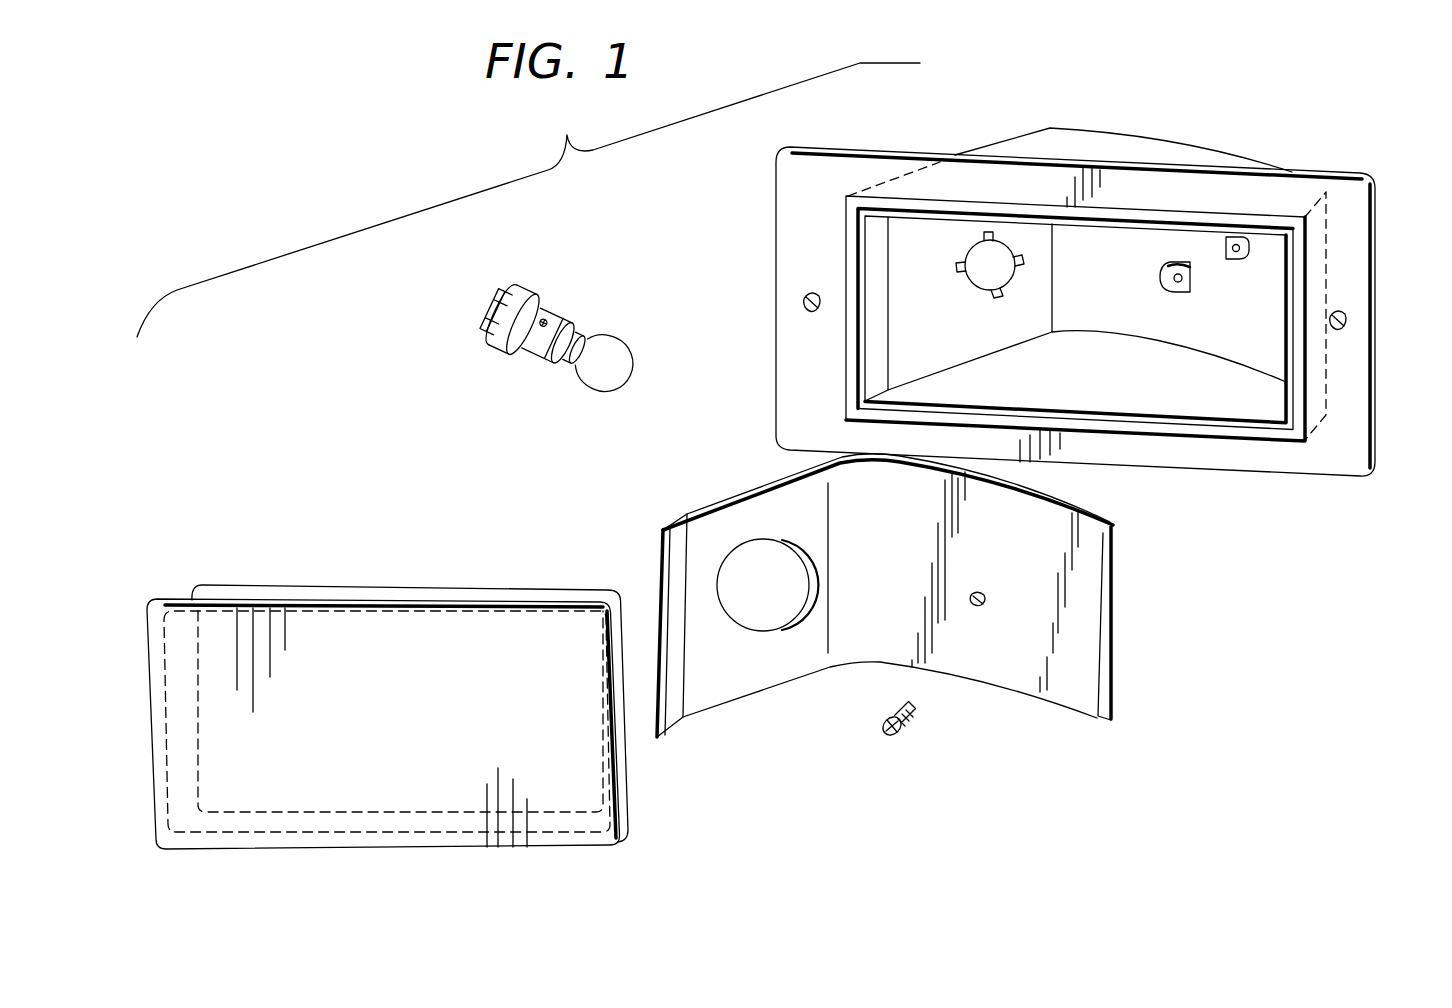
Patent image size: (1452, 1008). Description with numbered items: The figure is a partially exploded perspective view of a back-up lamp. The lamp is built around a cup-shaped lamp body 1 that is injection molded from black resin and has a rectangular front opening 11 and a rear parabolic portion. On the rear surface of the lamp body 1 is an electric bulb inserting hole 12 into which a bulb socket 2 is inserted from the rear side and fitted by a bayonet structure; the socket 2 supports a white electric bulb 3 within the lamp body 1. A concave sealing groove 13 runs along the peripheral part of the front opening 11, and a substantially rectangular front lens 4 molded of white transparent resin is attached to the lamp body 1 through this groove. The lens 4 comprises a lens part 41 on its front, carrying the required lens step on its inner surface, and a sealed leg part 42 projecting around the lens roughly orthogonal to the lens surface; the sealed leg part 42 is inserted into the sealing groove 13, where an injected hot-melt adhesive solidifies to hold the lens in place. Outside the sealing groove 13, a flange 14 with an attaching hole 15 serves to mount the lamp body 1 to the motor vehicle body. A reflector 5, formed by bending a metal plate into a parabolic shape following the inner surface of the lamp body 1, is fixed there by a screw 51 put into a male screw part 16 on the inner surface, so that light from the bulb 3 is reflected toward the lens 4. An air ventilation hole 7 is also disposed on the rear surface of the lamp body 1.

The lamp body 1 is at (1060, 150).
The bulb socket 2 is at (543, 303).
The electric bulb 3 is at (594, 367).
The front lens 4 is at (268, 601).
The lens part 41 is at (438, 797).
The sealed leg part 42 is at (470, 590).
The reflector 5 is at (877, 653).
The screw 51 is at (903, 727).
The air ventilation hole 7 is at (1239, 240).
The front opening 11 is at (1207, 400).
The electric bulb inserting hole 12 is at (973, 263).
The sealing groove 13 is at (1145, 425).
The flange 14 is at (1358, 436).
The attaching hole 15 is at (1350, 314).
The male screw part 16 is at (1165, 282).